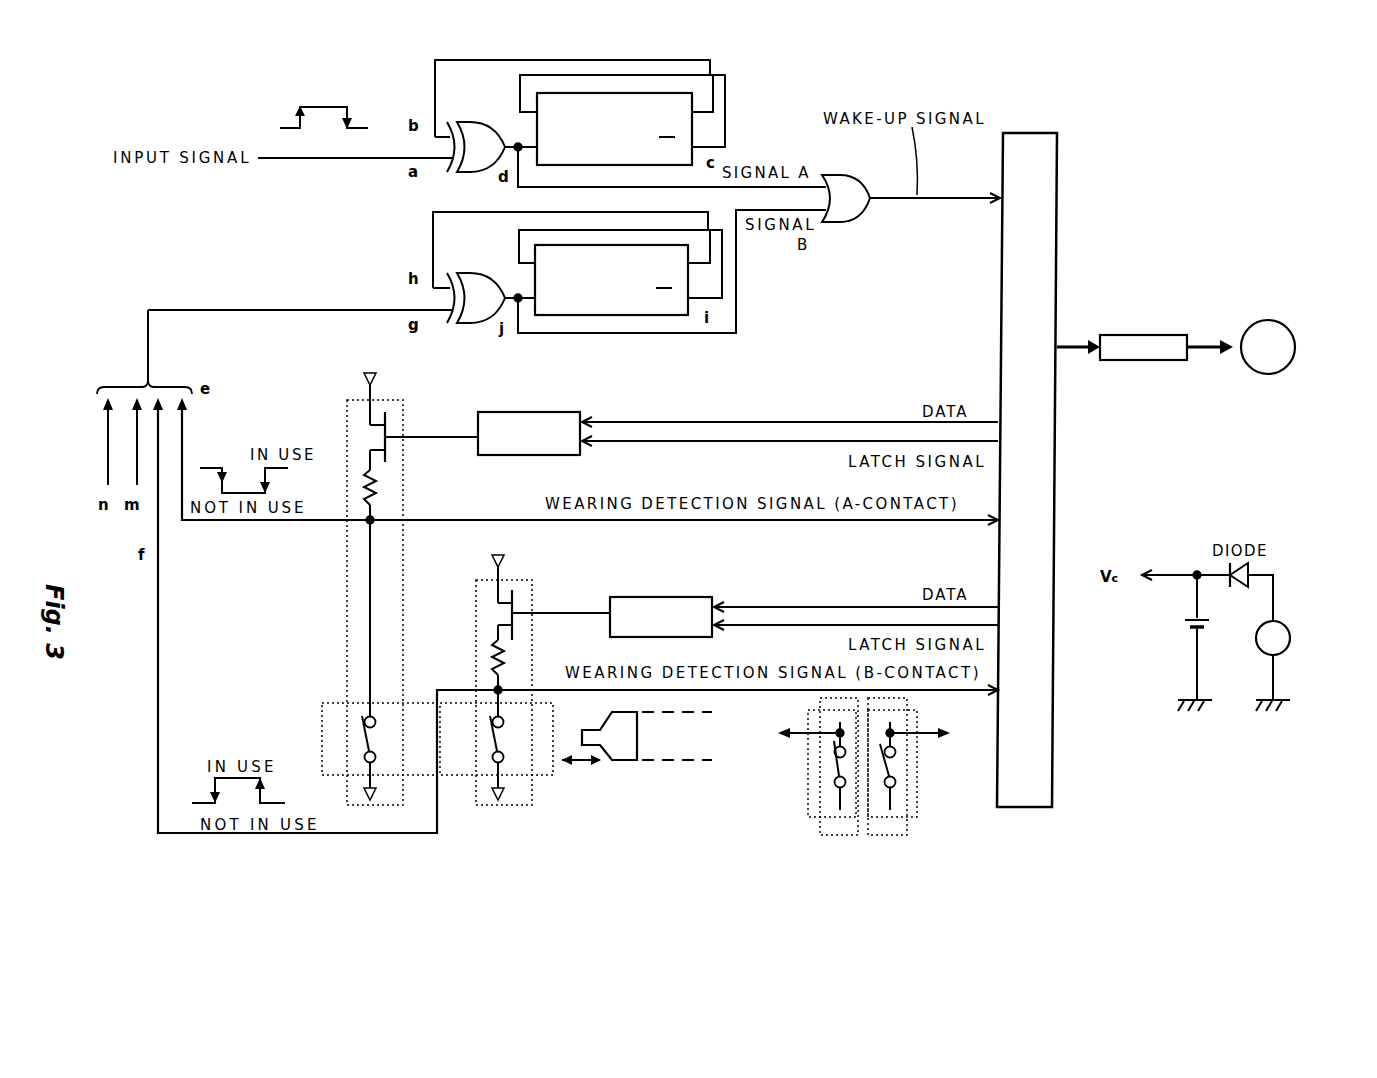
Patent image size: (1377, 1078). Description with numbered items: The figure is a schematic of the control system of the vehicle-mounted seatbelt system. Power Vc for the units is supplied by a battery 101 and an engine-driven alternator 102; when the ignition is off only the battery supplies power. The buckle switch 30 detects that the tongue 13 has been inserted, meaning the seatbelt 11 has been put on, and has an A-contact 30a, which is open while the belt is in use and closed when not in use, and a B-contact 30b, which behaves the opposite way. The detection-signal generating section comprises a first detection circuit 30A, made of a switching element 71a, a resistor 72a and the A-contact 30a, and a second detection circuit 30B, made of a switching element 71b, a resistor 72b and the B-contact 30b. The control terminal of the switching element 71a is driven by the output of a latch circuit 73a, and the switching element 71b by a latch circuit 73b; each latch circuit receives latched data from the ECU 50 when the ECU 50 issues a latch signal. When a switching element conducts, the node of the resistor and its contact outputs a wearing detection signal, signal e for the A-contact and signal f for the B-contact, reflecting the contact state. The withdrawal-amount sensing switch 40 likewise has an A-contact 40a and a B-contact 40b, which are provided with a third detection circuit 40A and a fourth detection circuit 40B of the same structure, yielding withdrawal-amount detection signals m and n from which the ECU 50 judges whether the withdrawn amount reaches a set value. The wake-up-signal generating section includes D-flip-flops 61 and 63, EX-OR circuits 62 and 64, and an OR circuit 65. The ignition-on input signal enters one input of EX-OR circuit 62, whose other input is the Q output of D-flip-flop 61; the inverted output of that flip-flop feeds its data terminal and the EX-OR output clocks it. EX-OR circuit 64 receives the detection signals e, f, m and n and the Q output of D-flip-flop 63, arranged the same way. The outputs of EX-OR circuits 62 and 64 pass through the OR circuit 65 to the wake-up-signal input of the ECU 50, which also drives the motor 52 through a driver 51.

The D-flip-flop 61 is at (580, 112).
The EX-OR circuit 62 is at (486, 137).
The D-flip-flop 63 is at (577, 263).
The EX-OR circuit 64 is at (484, 288).
The OR circuit 65 is at (911, 211).
The ECU 50 is at (1012, 131).
The motor driver 51 is at (1140, 333).
The motor 52 is at (1266, 318).
The switching element 71a is at (404, 423).
The resistor 72a is at (404, 492).
The latch circuit 73a is at (738, 422).
The switching element 71b is at (528, 594).
The resistor 72b is at (533, 663).
The latch circuit 73b is at (804, 606).
The first detection circuit 30A is at (383, 578).
The second detection circuit 30B is at (514, 671).
The A-contact 30a is at (353, 741).
The B-contact 30b is at (515, 738).
The buckle switch 30 is at (421, 788).
The tongue 13 is at (618, 737).
The seatbelt 11 is at (678, 737).
The third detection circuit 40A is at (822, 723).
The fourth detection circuit 40B is at (908, 721).
The A-contact 40a is at (835, 765).
The B-contact 40b is at (893, 765).
The withdrawal-amount sensing switch 40 is at (858, 794).
The battery 101 is at (1178, 628).
The alternator 102 is at (1285, 648).